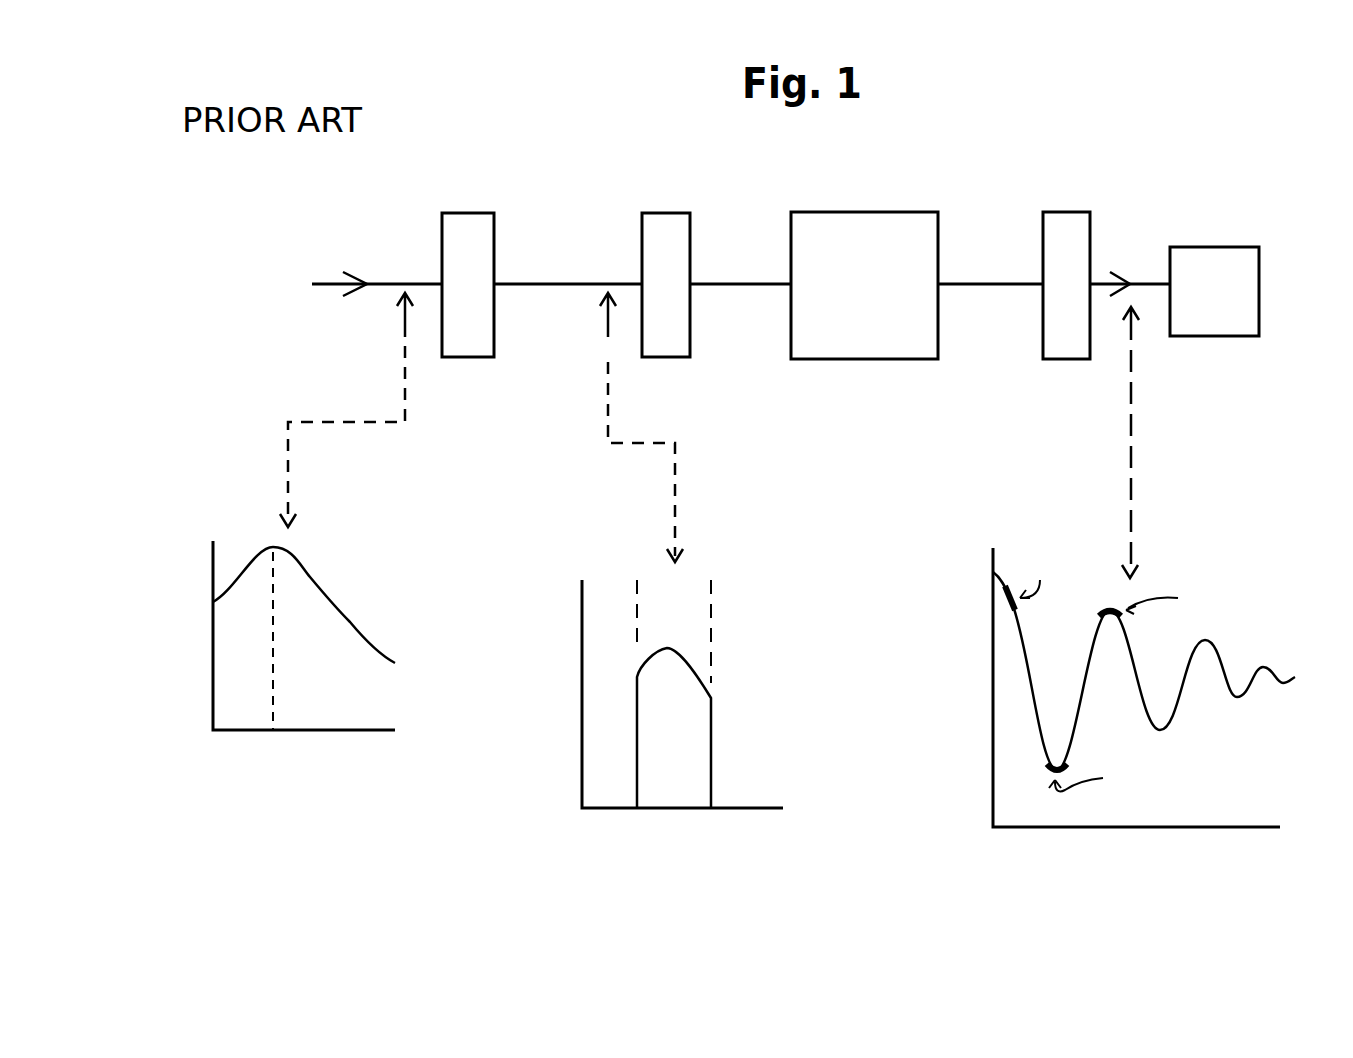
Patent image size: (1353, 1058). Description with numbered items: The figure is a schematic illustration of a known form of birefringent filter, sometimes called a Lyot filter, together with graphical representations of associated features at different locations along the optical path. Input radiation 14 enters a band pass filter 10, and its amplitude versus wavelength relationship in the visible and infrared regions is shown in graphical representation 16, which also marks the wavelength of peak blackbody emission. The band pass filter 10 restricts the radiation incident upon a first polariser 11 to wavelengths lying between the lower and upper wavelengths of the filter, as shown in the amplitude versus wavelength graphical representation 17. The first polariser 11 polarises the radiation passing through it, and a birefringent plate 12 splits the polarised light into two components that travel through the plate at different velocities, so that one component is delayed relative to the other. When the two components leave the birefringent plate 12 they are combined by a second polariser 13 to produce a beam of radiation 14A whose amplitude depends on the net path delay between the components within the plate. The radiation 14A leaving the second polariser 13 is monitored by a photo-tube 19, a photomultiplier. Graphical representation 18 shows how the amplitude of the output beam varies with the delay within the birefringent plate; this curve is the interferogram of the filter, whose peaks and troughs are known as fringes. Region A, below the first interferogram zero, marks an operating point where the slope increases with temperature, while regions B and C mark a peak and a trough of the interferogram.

The band pass filter 10 is at (466, 240).
The first polariser 11 is at (663, 240).
The birefringent plate 12 is at (830, 238).
The second polariser 13 is at (1067, 230).
The input radiation 14 is at (381, 290).
The beam of radiation 14A is at (1137, 287).
The graphical representation 16 is at (350, 559).
The graphical representation 17 is at (746, 637).
The graphical representation 18 is at (1302, 572).
The photo-tube 19 is at (1232, 265).